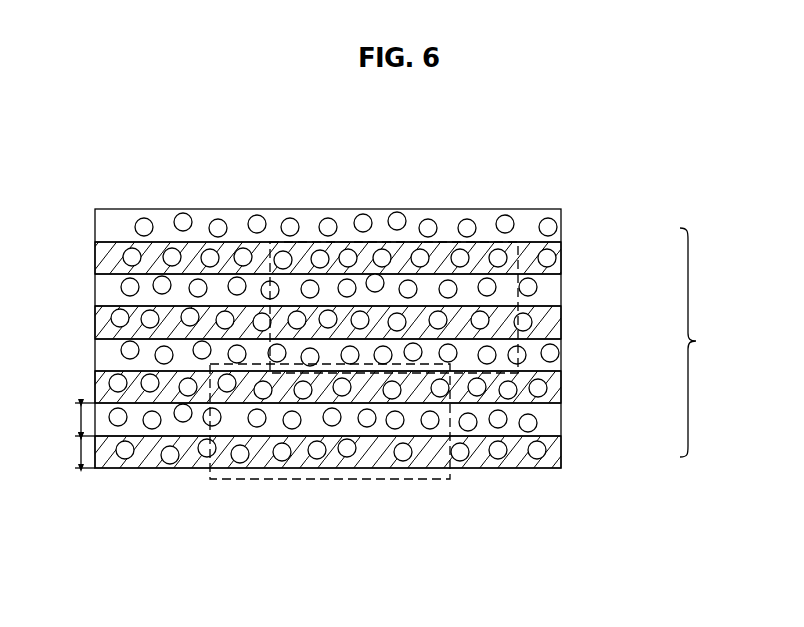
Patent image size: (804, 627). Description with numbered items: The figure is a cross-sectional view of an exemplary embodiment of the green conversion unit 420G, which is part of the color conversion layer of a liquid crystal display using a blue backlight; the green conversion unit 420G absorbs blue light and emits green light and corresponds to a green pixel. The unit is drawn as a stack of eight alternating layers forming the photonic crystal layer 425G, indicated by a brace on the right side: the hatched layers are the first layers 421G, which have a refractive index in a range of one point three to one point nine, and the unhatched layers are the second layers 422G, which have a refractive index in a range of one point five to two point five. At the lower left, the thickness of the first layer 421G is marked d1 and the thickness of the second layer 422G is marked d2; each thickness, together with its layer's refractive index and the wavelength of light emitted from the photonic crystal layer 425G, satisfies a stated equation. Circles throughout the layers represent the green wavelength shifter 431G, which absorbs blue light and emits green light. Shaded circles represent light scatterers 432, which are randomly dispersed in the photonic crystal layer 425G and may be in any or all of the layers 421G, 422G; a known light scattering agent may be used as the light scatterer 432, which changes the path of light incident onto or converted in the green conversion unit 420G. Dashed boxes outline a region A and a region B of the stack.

The green conversion unit 420G is at (155, 163).
The first layer 421G is at (561, 255).
The second layer 422G is at (561, 223).
The photonic crystal layer 425G is at (715, 342).
The green wavelength shifter 431G is at (118, 426).
The light scatterer 432 is at (189, 396).
The region A is at (323, 480).
The region B is at (412, 240).
The thickness of the first layer d1 is at (69, 452).
The thickness of the second layer d2 is at (69, 419).